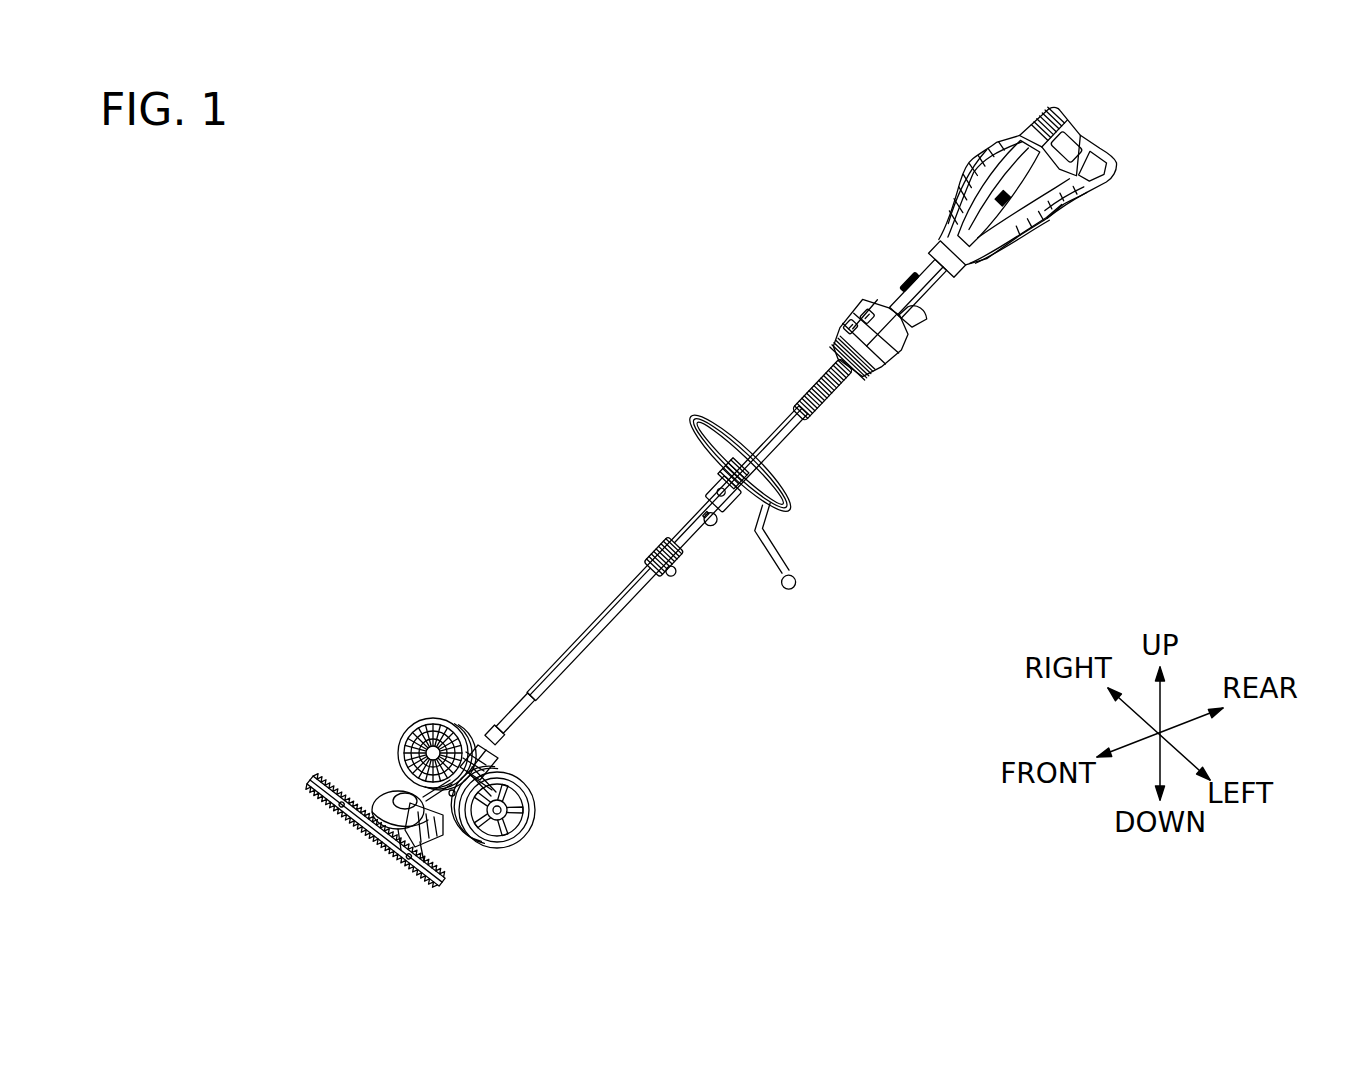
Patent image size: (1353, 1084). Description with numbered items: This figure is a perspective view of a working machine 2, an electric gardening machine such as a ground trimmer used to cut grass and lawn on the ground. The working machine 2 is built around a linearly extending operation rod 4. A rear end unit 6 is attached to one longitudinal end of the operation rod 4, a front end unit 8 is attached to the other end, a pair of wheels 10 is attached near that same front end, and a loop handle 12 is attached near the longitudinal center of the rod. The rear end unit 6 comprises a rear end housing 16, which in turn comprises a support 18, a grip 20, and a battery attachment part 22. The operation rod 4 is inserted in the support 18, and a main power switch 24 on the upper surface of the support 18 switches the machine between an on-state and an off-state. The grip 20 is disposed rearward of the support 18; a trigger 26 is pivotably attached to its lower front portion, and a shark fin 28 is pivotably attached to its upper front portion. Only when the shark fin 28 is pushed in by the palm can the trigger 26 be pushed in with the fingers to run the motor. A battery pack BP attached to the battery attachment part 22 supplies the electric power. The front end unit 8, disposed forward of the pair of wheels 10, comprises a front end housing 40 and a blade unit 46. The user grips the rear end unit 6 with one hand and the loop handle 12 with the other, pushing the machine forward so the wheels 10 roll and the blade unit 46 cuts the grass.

The working machine 2 is at (474, 574).
The operation rod 4 is at (583, 630).
The rear end unit 6 is at (918, 228).
The front end unit 8 is at (287, 737).
The pair of wheels 10 is at (437, 720).
The loop handle 12 is at (717, 420).
The rear end housing 16 is at (973, 168).
The support 18 is at (890, 357).
The grip 20 is at (937, 290).
The battery attachment part 22 is at (1032, 222).
The main power switch 24 is at (862, 307).
The trigger 26 is at (920, 320).
The shark fin 28 is at (907, 281).
The front end housing 40 is at (393, 800).
The blade unit 46 is at (333, 853).
The battery pack BP is at (1100, 147).